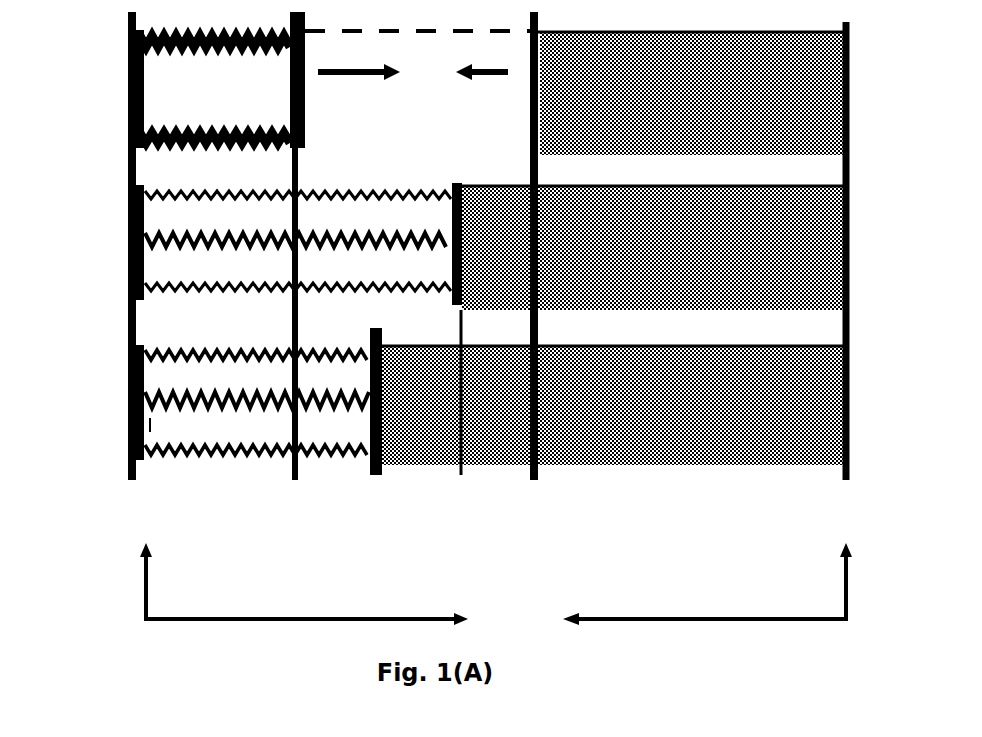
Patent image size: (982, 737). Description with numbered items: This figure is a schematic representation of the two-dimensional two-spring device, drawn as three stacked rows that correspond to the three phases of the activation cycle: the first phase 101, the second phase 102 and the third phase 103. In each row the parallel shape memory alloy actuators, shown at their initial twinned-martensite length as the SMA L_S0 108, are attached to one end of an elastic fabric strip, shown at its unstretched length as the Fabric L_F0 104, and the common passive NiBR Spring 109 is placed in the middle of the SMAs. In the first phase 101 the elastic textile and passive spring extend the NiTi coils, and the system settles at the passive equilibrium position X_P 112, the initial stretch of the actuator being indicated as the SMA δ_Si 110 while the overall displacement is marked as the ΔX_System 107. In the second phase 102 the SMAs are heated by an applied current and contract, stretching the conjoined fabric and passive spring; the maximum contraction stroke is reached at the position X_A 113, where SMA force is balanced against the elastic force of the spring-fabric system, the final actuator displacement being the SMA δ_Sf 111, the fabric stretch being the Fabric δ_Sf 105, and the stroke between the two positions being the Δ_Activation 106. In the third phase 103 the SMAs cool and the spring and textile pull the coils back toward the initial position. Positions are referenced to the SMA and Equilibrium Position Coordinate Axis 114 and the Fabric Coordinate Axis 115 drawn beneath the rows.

The phase 1 101 is at (169, 80).
The phase 2 102 is at (89, 242).
The phase 3 103 is at (92, 402).
The Fabric L_F0 104 is at (614, 248).
The Fabric δ_Sf 105 is at (499, 405).
The Δ_Activation 106 is at (421, 405).
The ΔX_System 107 is at (413, 72).
The SMA L_S0 108 is at (217, 319).
The NiBR Spring 109 is at (298, 315).
The SMA δ_Si 110 is at (417, 250).
The SMA δ_Sf 111 is at (312, 462).
The X_P 112 is at (417, 109).
The X_A 113 is at (355, 397).
The SMA and Equilibrium Position Coordinate Axis 114 is at (215, 617).
The Fabric Coordinate Axis 115 is at (768, 614).